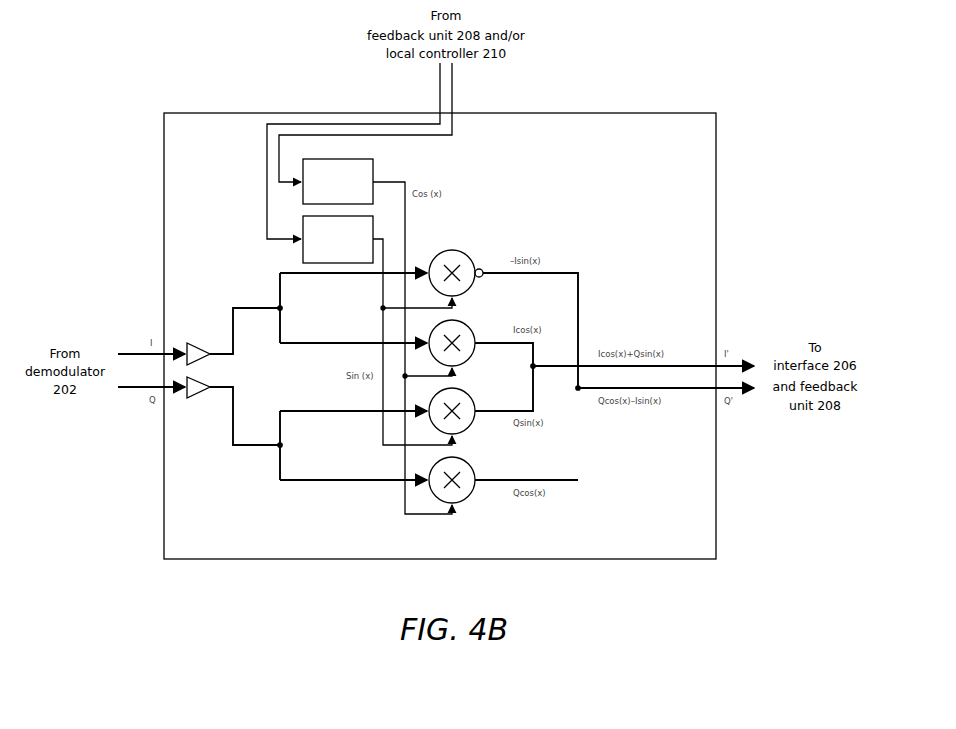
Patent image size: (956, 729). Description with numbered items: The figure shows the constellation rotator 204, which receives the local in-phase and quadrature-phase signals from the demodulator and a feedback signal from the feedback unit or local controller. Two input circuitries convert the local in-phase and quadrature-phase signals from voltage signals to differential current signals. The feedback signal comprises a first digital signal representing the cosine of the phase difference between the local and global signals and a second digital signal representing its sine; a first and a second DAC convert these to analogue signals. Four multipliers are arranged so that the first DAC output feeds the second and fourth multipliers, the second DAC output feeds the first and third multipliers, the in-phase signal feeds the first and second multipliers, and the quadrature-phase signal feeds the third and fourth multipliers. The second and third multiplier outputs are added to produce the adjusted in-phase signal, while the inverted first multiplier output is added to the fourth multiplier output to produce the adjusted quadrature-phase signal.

The constellation rotator 204 is at (223, 115).